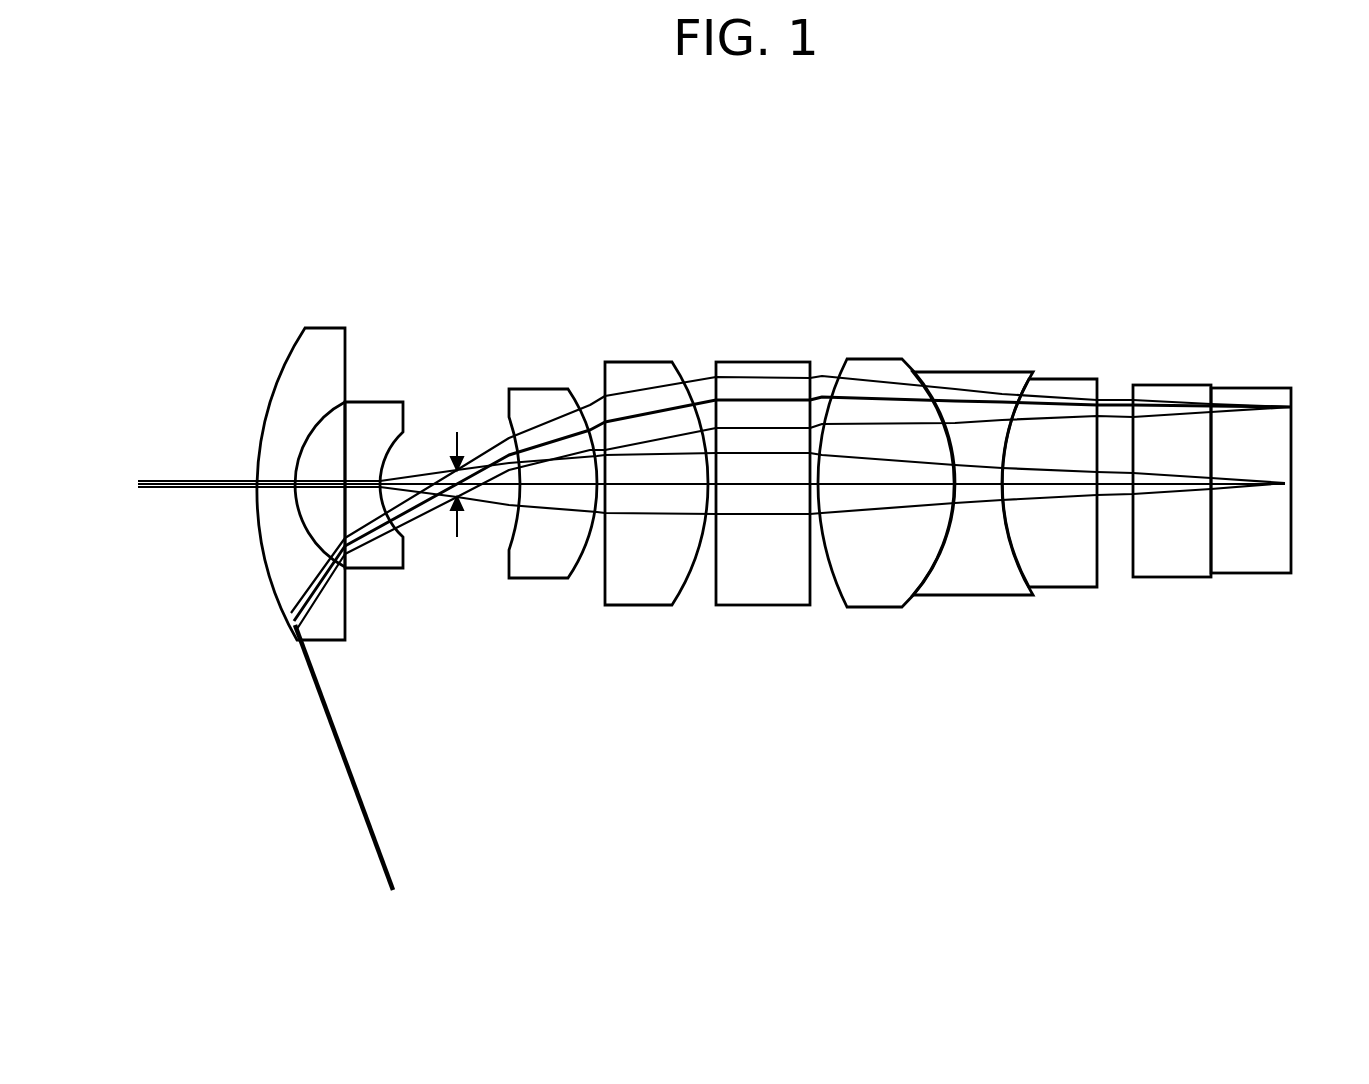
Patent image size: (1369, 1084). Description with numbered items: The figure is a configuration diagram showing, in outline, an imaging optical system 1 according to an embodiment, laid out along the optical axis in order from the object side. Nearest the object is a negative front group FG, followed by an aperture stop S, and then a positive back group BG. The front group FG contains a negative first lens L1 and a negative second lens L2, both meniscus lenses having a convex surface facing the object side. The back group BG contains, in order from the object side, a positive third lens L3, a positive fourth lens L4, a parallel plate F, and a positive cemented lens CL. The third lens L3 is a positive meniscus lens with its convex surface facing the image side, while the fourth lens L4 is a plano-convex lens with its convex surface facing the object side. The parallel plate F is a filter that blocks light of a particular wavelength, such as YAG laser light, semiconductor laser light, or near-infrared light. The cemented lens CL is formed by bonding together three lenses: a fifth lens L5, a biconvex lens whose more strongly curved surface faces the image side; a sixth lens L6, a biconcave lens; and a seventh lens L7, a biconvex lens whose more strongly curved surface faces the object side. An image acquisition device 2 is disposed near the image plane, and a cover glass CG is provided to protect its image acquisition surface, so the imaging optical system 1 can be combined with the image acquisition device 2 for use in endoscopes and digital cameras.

The imaging optical system 1 is at (716, 195).
The first lens L1 is at (320, 328).
The second lens L2 is at (373, 402).
The third lens L3 is at (535, 388).
The fourth lens L4 is at (633, 362).
The fifth lens L5 is at (873, 358).
The sixth lens L6 is at (962, 372).
The seventh lens L7 is at (1066, 379).
The parallel plate F is at (754, 362).
The aperture stop S is at (457, 432).
The cover glass CG is at (1167, 385).
The image acquisition device 2 is at (1248, 388).
The front group FG is at (248, 742).
The back group BG is at (472, 738).
The cemented lens CL is at (966, 474).